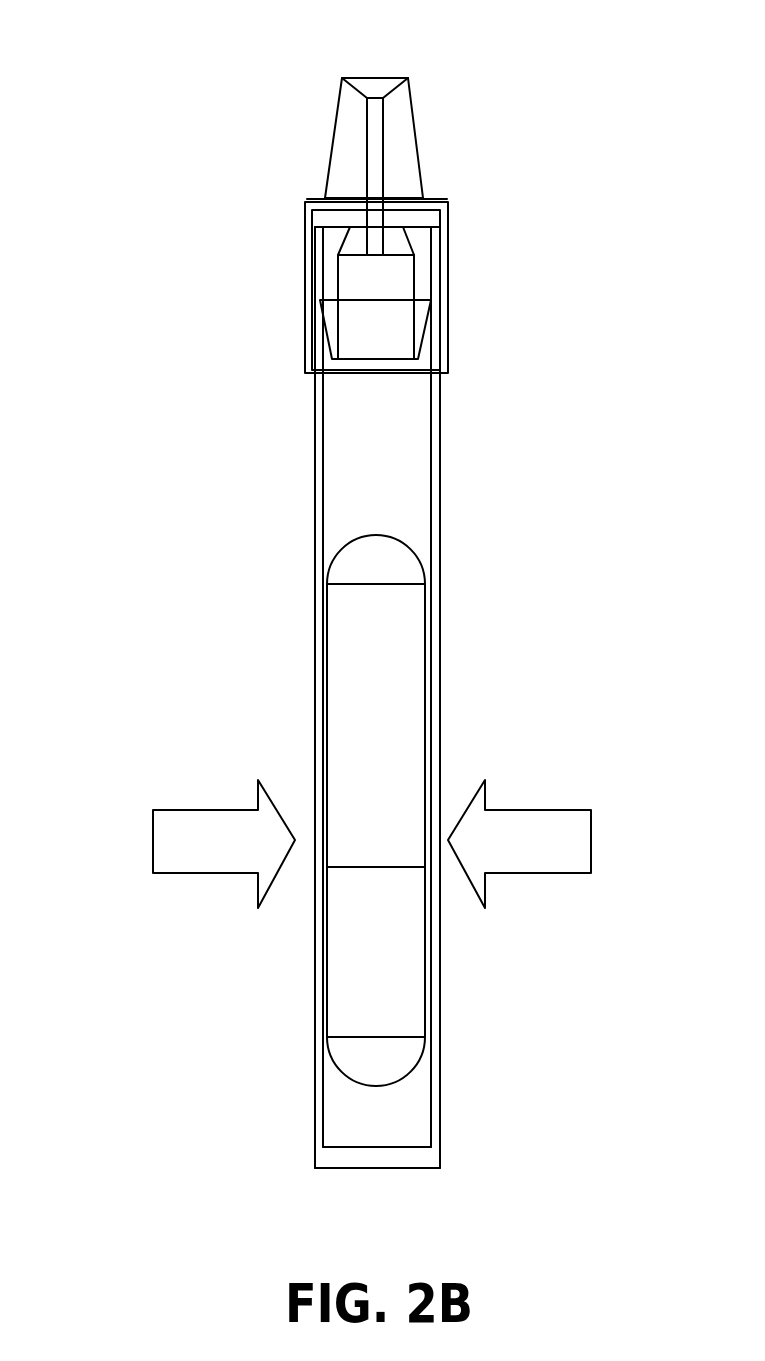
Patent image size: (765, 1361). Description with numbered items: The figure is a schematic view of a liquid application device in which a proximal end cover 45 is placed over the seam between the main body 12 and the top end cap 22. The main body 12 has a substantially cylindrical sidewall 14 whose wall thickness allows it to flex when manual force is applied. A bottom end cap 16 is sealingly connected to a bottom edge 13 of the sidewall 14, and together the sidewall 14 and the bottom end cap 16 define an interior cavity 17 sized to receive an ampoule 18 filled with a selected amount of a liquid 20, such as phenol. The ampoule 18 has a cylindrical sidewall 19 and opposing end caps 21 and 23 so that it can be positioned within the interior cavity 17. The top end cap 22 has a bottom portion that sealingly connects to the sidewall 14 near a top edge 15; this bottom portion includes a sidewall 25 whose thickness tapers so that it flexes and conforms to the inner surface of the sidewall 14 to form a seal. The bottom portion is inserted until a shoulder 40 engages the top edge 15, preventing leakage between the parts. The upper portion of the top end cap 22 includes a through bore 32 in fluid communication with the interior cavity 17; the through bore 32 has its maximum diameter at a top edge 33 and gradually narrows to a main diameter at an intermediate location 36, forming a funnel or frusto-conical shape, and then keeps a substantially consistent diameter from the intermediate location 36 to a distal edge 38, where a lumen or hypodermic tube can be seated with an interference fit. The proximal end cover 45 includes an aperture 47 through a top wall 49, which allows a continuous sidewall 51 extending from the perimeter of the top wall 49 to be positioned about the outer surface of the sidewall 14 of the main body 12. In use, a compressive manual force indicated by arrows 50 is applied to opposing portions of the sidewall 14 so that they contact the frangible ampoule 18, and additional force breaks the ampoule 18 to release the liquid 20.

The main body 12 is at (300, 1096).
The bottom edge 13 is at (442, 1125).
The sidewall 14 is at (442, 477).
The top edge 15 is at (407, 226).
The bottom end cap 16 is at (363, 1170).
The interior cavity 17 is at (409, 521).
The ampoule 18 is at (395, 712).
The cylindrical sidewall 19 is at (333, 715).
The liquid 20 is at (349, 970).
The end cap 21 is at (373, 547).
The top end cap 22 is at (433, 150).
The end cap 23 is at (357, 1075).
The sidewall 25 is at (330, 292).
The through bore 32 is at (375, 150).
The top edge 33 is at (348, 60).
The intermediate location 36 is at (365, 102).
The distal edge 38 is at (368, 232).
The shoulder 40 is at (318, 215).
The proximal end cover 45 is at (462, 317).
The aperture 47 is at (433, 197).
The top wall 49 is at (447, 199).
The arrows 50 is at (150, 842).
The continuous sidewall 51 is at (302, 350).